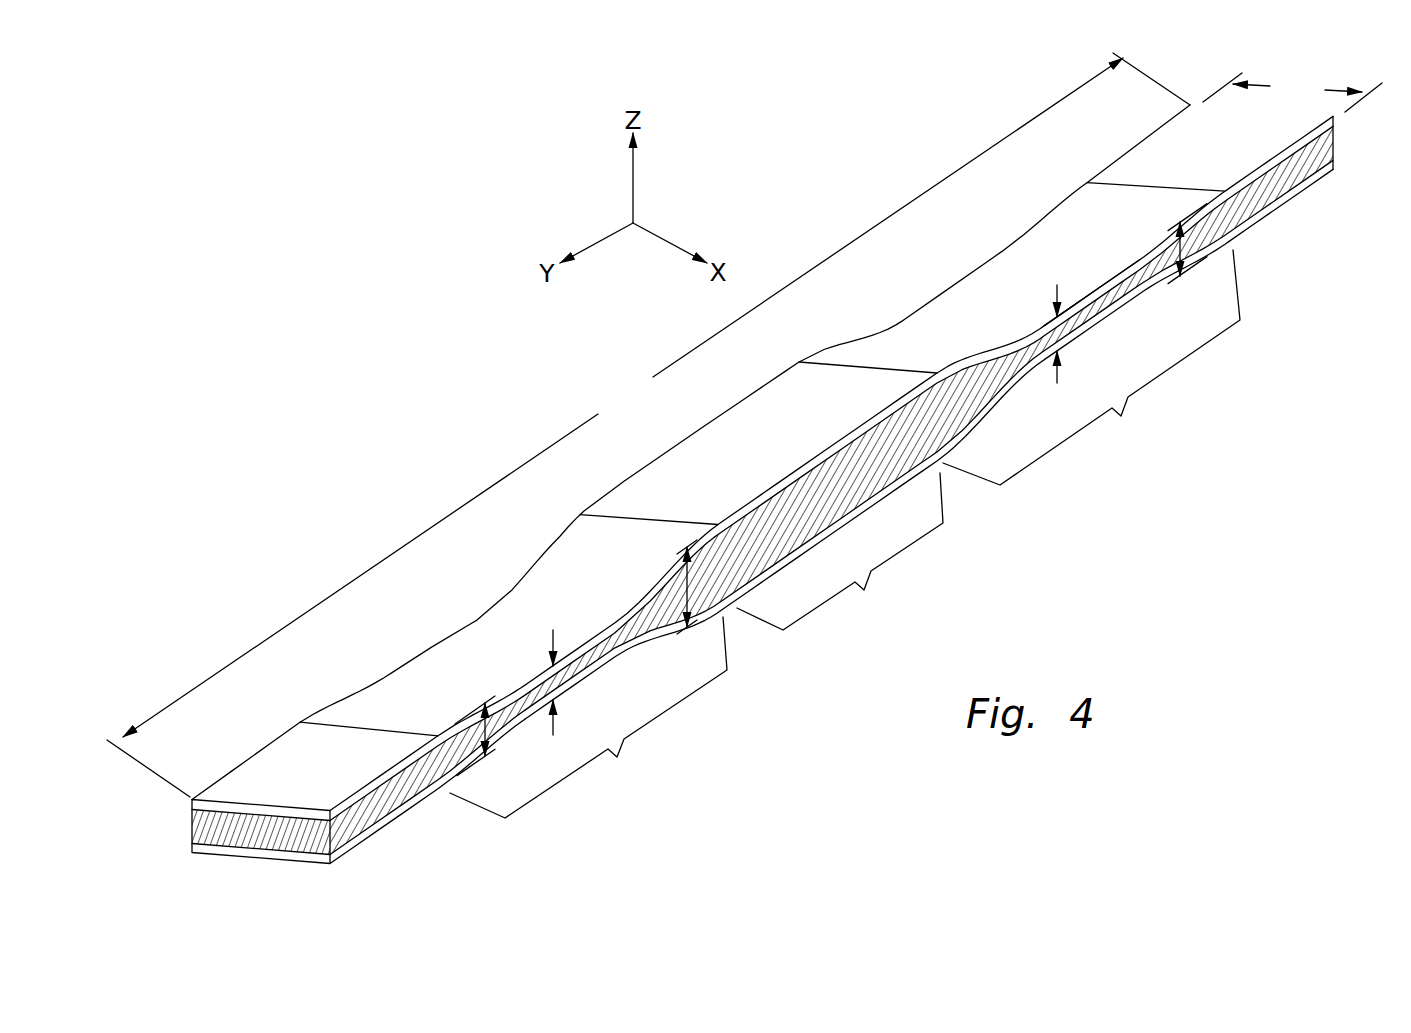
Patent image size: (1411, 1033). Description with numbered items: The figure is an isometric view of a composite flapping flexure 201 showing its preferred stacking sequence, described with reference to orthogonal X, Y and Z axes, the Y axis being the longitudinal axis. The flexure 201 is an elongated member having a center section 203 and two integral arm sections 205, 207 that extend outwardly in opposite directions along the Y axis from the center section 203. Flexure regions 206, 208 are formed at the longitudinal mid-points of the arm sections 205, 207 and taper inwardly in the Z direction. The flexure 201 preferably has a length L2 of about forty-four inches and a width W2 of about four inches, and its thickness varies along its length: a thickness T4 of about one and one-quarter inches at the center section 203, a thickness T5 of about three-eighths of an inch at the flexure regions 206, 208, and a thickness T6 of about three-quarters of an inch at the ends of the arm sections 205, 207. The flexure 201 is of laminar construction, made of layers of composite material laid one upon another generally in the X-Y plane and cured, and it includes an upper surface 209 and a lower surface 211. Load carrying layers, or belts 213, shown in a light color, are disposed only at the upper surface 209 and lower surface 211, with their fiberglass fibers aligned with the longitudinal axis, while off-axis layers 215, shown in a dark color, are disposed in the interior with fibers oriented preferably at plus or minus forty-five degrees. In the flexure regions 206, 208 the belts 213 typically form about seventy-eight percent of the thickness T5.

The composite flapping flexure 201 is at (544, 370).
The center section 203 is at (761, 496).
The arm section 205 is at (449, 614).
The flexure region 206 is at (588, 717).
The arm section 207 is at (1087, 338).
The flexure region 208 is at (1091, 367).
The upper surface 209 is at (968, 304).
The lower surface 211 is at (1000, 391).
The belts 213 is at (798, 473).
The off-axis layers 215 is at (951, 421).
The thickness at center section T4 is at (671, 612).
The thickness at flexure regions T5 is at (560, 690).
The thickness at arm section ends T6 is at (497, 737).
The length L2 is at (648, 425).
The width W2 is at (1292, 92).